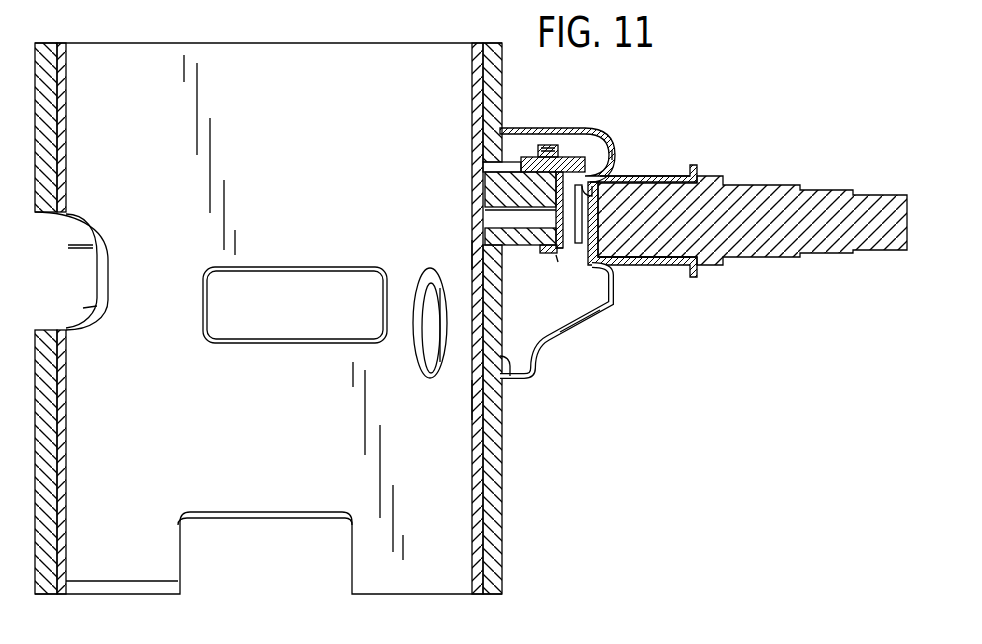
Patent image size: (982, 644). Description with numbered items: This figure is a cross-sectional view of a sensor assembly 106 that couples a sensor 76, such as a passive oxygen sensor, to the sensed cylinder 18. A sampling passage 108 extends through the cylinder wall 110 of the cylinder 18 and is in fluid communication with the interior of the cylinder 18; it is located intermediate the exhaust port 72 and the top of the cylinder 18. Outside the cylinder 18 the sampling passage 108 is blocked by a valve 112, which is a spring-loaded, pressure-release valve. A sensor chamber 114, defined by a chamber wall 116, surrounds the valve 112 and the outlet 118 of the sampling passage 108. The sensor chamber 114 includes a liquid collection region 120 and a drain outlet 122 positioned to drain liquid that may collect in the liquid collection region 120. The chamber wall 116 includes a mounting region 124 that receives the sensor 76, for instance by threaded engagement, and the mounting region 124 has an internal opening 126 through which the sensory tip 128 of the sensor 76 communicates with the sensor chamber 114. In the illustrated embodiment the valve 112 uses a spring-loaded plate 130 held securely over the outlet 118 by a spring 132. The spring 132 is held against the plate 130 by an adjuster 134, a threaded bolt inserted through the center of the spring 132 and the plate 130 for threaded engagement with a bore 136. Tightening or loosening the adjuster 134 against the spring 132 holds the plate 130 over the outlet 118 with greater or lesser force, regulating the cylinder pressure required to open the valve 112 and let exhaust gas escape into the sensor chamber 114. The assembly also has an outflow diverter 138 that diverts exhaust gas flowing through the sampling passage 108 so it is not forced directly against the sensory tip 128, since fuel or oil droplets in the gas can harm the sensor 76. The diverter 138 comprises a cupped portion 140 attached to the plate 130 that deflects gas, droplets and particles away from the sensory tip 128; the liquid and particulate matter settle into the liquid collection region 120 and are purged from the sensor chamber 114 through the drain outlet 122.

The cylinder 18 is at (460, 448).
The exhaust port 72 is at (203, 320).
The sensor 76 is at (782, 178).
The sensor assembly 106 is at (800, 97).
The sampling passage 108 is at (500, 223).
The cylinder wall 110 is at (471, 256).
The valve 112 is at (580, 130).
The sensor chamber 114 is at (545, 290).
The chamber wall 116 is at (620, 144).
The outlet 118 is at (525, 193).
The liquid collection region 120 is at (473, 397).
The drain outlet 122 is at (556, 262).
The mounting region 124 is at (652, 264).
The internal opening 126 is at (592, 187).
The sensory tip 128 is at (613, 304).
The spring-loaded plate 130 is at (592, 320).
The spring 132 is at (575, 140).
The adjuster 134 is at (515, 160).
The bore 136 is at (500, 165).
The outflow diverter 138 is at (556, 265).
The cupped portion 140 is at (542, 250).